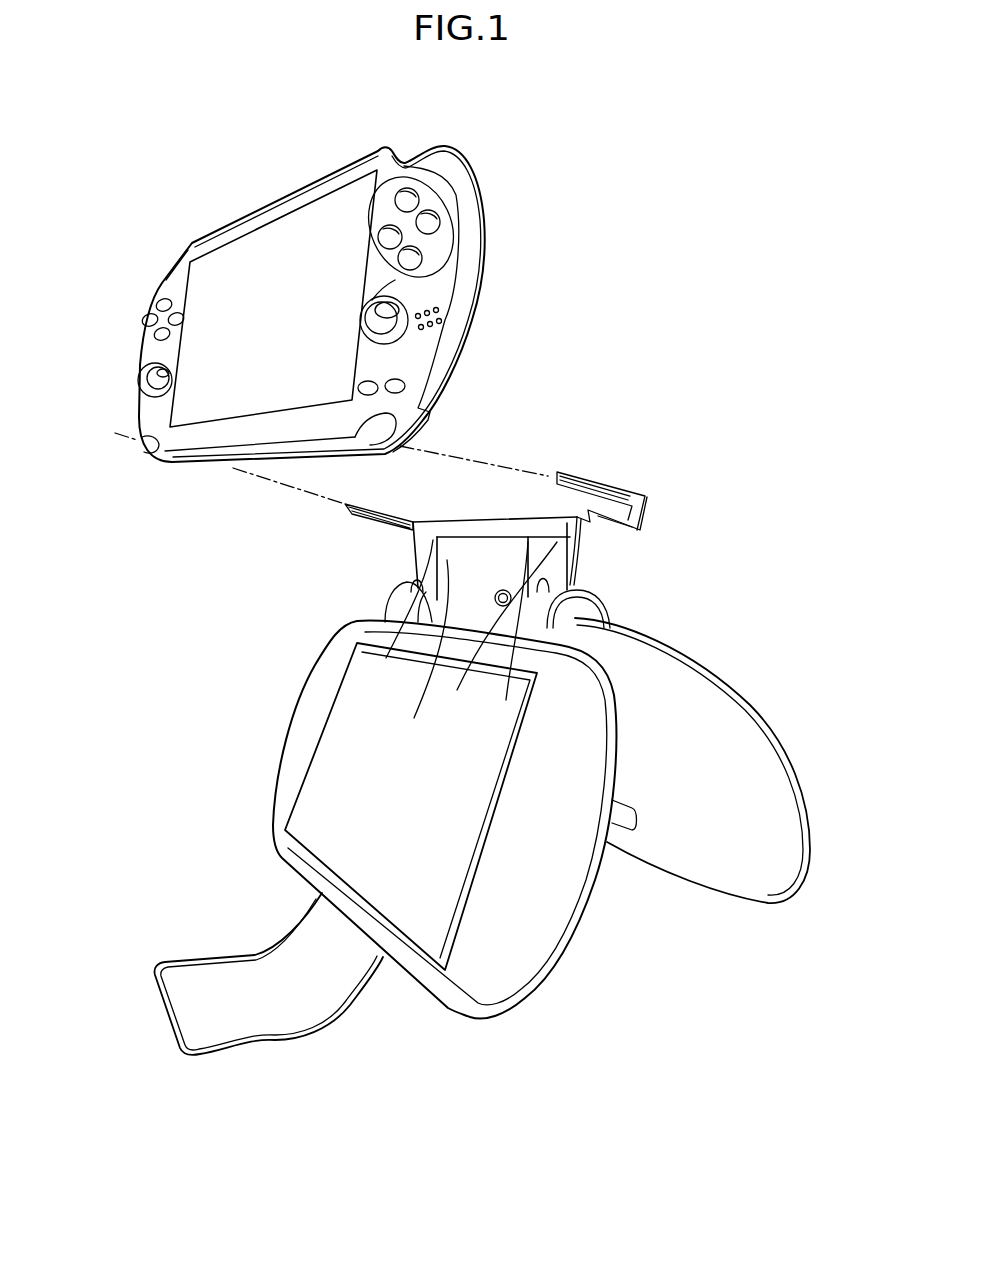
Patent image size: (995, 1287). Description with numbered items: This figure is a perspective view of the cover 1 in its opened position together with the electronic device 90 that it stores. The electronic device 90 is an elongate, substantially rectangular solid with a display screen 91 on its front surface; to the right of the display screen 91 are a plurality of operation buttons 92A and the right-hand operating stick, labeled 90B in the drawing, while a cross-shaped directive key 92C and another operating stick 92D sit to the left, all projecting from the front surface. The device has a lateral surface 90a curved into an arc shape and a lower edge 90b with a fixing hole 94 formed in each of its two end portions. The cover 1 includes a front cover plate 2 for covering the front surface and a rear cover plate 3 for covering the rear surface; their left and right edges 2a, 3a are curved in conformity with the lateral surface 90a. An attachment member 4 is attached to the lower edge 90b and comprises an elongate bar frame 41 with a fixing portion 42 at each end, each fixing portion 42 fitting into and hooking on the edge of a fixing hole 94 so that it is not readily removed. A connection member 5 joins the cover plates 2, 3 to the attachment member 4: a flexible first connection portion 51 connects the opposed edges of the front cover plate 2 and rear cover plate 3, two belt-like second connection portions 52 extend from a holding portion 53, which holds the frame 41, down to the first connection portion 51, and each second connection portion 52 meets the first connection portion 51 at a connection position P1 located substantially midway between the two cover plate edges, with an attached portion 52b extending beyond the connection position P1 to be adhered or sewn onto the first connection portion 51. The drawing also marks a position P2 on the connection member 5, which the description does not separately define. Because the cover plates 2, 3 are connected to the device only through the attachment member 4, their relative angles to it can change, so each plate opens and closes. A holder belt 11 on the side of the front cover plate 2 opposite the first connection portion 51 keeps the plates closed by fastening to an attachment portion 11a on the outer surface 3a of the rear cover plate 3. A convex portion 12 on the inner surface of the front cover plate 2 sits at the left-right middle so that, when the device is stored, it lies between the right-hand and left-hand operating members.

The cover 1 is at (512, 864).
The front cover plate 2 is at (432, 865).
The edge of front cover plate 2a is at (575, 903).
The rear cover plate 3 is at (723, 807).
The outer surface of rear cover plate 3a is at (812, 805).
The attachment member 4 is at (480, 461).
The connection member 5 is at (498, 601).
The holder belt 11 is at (254, 1046).
The attachment portion 11a is at (640, 818).
The convex portion 12 is at (330, 749).
The frame 41 is at (585, 518).
The fixing portion 42 is at (576, 474).
The first connection portion 51 is at (420, 649).
The second connection portion 52 is at (420, 556).
The attached portion 52b is at (395, 598).
The holding portion 53 is at (470, 520).
The electronic device 90 is at (381, 147).
The lateral surface 90a is at (480, 265).
The lower edge 90b is at (218, 466).
The right analog stick 90B is at (403, 322).
The display screen 91 is at (266, 222).
The operation buttons 92A is at (412, 257).
The directive key 92C is at (152, 298).
The operating stick 92D is at (137, 378).
The fixing hole 94 is at (149, 453).
The connection position P1 is at (447, 633).
The position P2 is at (498, 626).